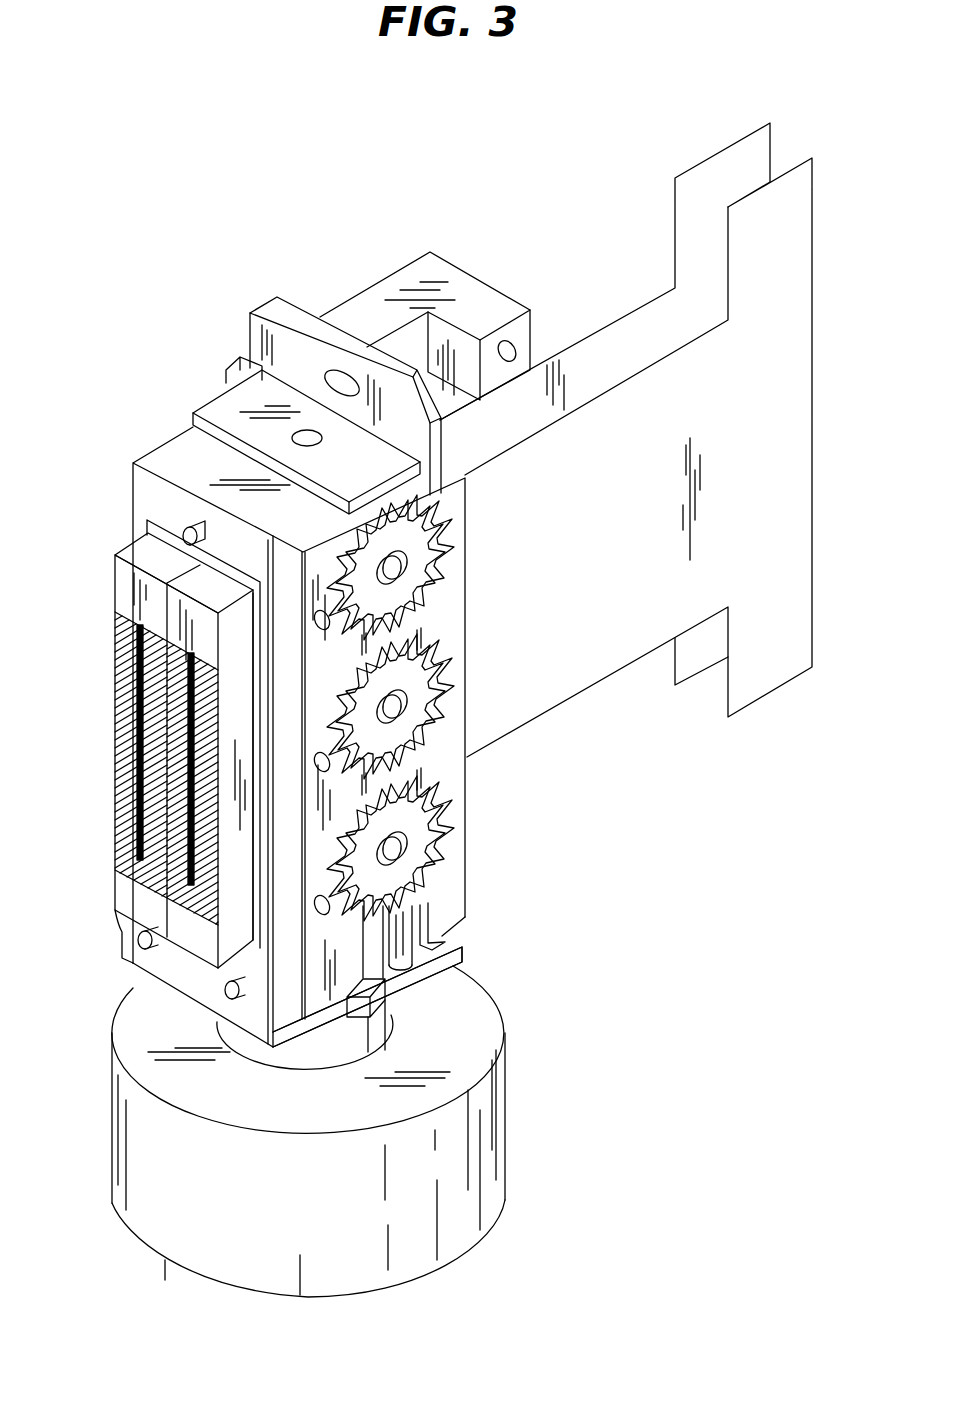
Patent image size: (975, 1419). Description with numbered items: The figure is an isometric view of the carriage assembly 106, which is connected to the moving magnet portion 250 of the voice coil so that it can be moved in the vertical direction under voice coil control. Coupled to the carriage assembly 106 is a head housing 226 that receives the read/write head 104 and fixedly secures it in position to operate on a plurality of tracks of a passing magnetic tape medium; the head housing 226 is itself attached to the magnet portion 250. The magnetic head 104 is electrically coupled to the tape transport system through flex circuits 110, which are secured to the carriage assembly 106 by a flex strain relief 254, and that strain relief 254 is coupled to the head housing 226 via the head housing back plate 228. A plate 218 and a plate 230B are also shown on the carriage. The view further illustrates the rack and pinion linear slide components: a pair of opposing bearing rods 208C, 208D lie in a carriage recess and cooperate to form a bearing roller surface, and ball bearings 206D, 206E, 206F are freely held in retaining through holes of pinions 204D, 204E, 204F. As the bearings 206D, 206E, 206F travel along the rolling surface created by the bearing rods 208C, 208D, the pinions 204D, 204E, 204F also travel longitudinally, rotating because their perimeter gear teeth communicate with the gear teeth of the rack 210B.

The carriage assembly 106 is at (194, 214).
The read/write head 104 is at (124, 582).
The flex circuits 110 is at (768, 690).
The top plate 218 is at (206, 404).
The head housing 226 is at (133, 452).
The head housing back plate 228 is at (292, 311).
The flex strain relief 254 is at (466, 296).
The pinion 204D is at (395, 565).
The pinion 204E is at (395, 704).
The pinion 204F is at (395, 846).
The ball bearing 206D is at (447, 530).
The ball bearing 206E is at (447, 665).
The ball bearing 206F is at (447, 798).
The bearing rod 208C is at (405, 942).
The bearing rod 208D is at (386, 1014).
The rack 210B is at (467, 810).
The base plate 230B is at (446, 967).
The moving magnet portion 250 is at (330, 1203).